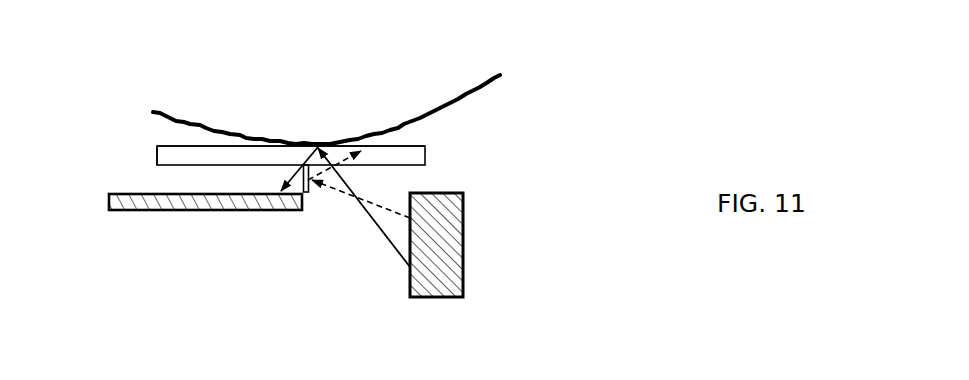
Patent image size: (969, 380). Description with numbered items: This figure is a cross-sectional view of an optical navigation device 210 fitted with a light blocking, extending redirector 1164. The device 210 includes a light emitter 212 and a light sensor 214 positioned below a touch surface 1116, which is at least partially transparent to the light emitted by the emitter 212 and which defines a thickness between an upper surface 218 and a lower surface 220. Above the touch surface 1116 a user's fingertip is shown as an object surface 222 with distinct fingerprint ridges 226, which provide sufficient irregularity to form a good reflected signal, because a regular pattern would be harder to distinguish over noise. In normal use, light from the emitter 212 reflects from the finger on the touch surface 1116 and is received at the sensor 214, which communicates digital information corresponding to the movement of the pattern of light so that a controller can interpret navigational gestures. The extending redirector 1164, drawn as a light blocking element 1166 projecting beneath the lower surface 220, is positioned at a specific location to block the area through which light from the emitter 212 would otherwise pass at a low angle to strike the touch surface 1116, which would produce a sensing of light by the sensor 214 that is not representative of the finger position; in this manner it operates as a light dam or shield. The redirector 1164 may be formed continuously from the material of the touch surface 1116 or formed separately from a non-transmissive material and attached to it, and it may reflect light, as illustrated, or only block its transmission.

The optical navigation device 210 is at (130, 280).
The light emitter 212 is at (448, 250).
The light sensor 214 is at (218, 211).
The upper surface 218 is at (412, 141).
The lower surface 220 is at (390, 166).
The object surface 222 is at (355, 108).
The fingerprint ridges 226 is at (292, 134).
The touch surface 1116 is at (153, 153).
The extending redirector 1164 is at (313, 197).
The light blocking element 1166 is at (302, 185).